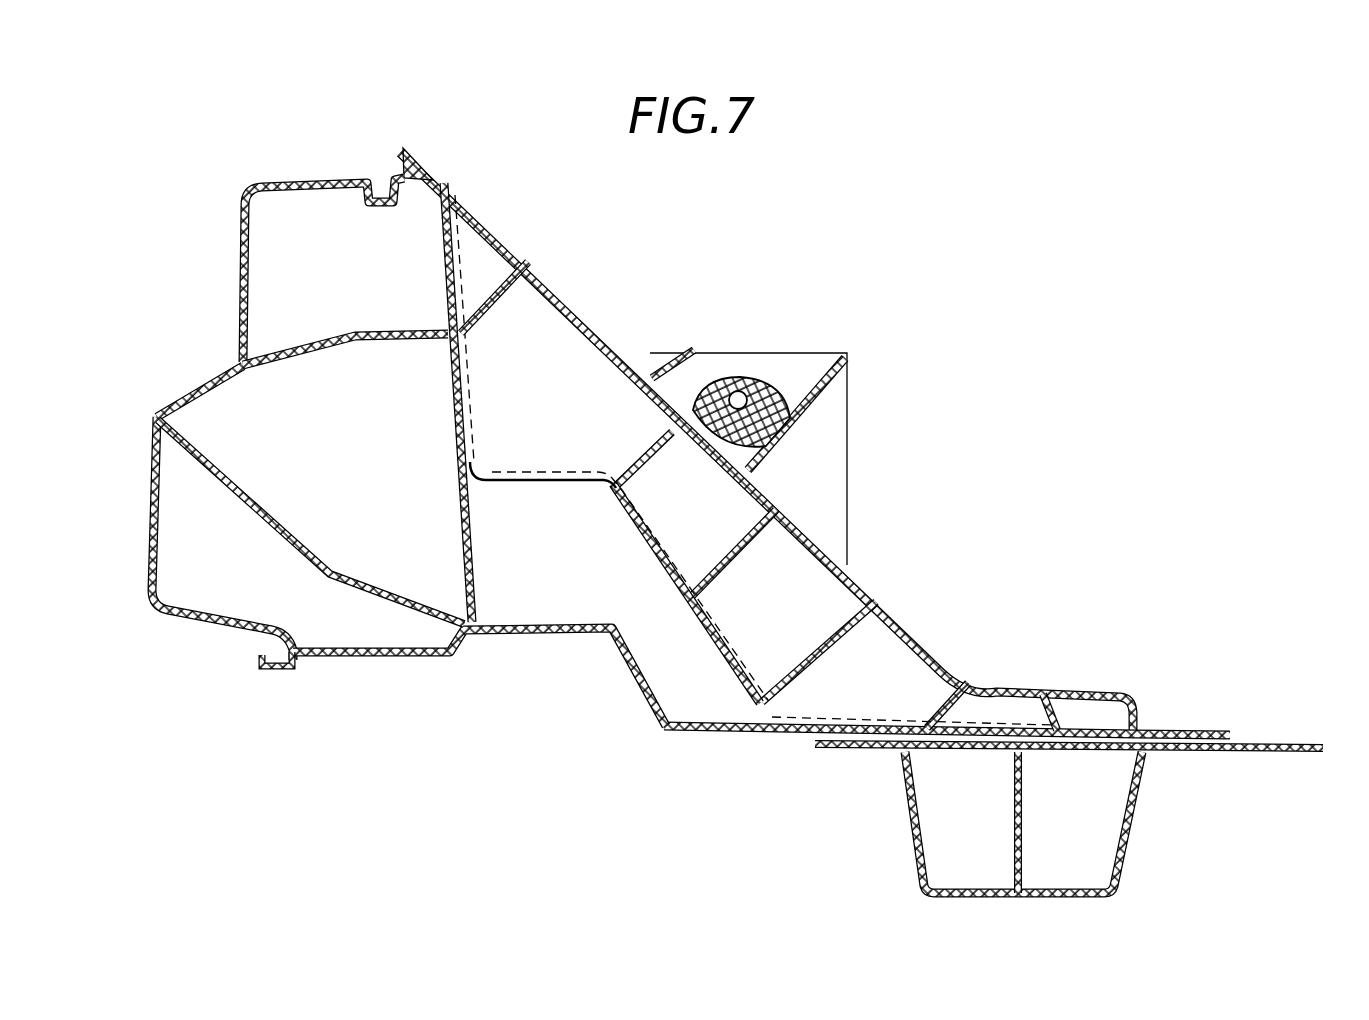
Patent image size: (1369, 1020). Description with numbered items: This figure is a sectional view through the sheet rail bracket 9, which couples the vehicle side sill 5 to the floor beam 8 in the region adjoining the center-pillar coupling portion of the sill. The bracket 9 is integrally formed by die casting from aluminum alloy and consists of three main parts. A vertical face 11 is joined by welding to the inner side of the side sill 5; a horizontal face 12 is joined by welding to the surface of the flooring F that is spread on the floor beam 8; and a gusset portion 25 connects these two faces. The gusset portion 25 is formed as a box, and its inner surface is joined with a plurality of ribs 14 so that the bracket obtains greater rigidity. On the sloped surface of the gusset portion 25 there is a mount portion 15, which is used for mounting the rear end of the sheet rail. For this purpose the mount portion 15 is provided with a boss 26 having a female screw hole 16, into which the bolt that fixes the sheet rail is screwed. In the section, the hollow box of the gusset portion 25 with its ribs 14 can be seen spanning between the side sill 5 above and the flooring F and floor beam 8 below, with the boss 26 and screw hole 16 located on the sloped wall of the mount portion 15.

The side sill 5 is at (363, 657).
The floor beam 8 is at (908, 797).
The sheet rail bracket 9 is at (590, 262).
The vertical face 11 is at (443, 287).
The horizontal face 12 is at (1188, 757).
The ribs 14 is at (660, 437).
The mount portion 15 is at (810, 358).
The female screw hole 16 is at (730, 391).
The gusset portion 25 is at (657, 517).
The boss 26 is at (753, 380).
The flooring F is at (1270, 737).